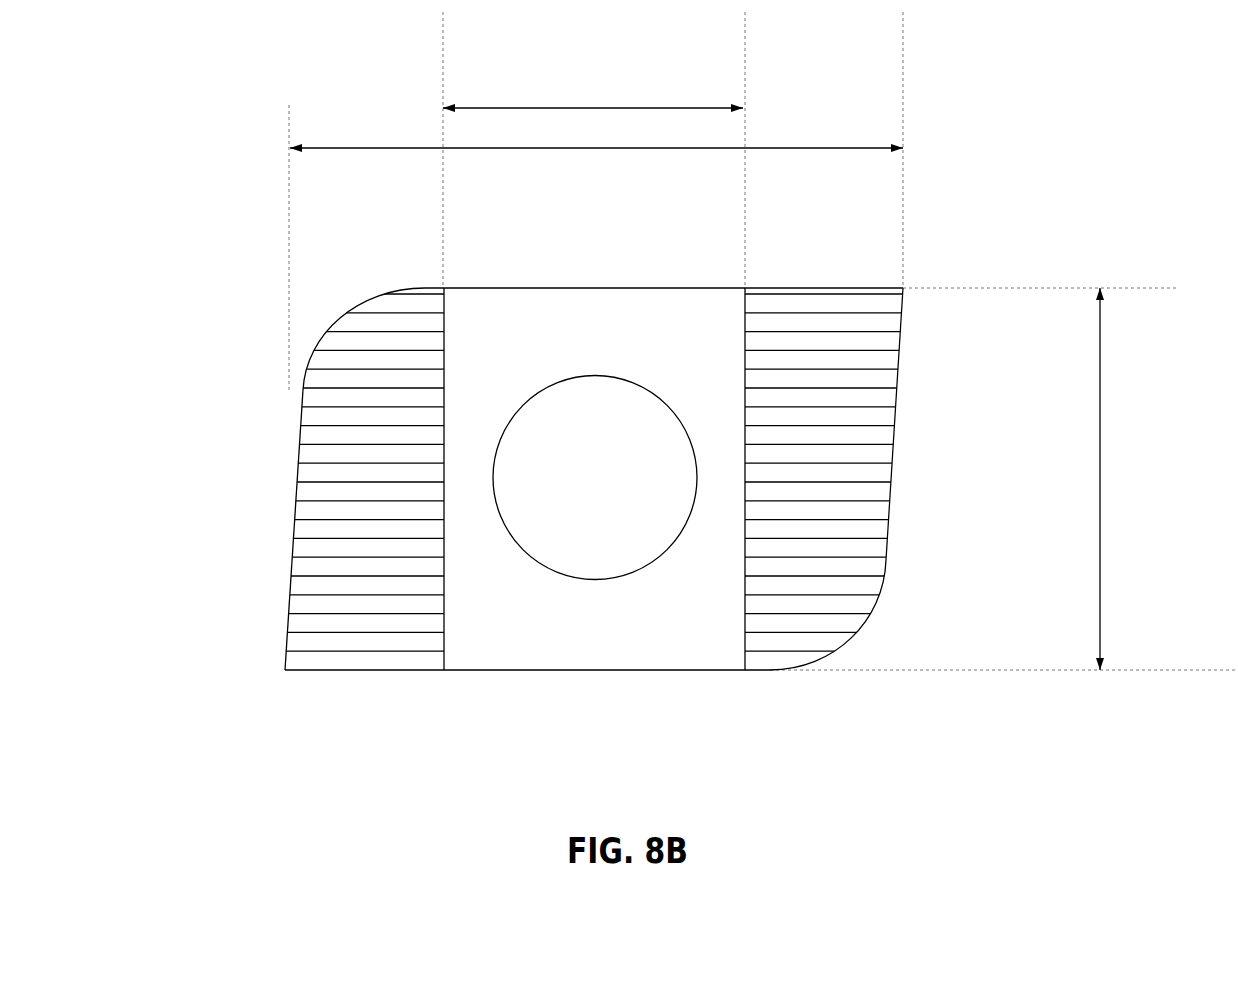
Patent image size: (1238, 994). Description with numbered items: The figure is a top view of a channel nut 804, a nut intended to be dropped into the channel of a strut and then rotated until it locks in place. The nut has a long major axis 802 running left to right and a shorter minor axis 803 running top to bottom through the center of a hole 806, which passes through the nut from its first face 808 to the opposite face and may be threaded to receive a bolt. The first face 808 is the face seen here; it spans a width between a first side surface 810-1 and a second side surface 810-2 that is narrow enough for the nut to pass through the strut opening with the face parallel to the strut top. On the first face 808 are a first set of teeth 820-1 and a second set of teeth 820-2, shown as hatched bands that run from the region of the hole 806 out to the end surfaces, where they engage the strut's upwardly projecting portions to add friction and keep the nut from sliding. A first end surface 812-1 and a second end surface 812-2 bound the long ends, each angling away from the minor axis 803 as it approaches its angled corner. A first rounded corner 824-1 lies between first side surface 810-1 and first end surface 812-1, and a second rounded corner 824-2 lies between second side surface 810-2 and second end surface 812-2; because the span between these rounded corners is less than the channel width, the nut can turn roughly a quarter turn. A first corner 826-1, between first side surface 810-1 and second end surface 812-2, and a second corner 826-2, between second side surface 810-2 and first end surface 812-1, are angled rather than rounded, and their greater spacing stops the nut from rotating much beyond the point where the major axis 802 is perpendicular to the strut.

The major axis 802 is at (893, 472).
The minor axis 803 is at (598, 288).
The channel nut 804 is at (182, 217).
The hole 806 is at (595, 478).
The first face 808 is at (470, 318).
The first side surface 810-1 is at (455, 672).
The second side surface 810-2 is at (767, 287).
The first end surface 812-1 is at (900, 378).
The second end surface 812-2 is at (284, 620).
The first set of teeth 820-1 is at (311, 398).
The second set of teeth 820-2 is at (880, 530).
The first rounded corner 824-1 is at (856, 620).
The second rounded corner 824-2 is at (350, 313).
The first corner 826-1 is at (284, 670).
The second corner 826-2 is at (903, 288).